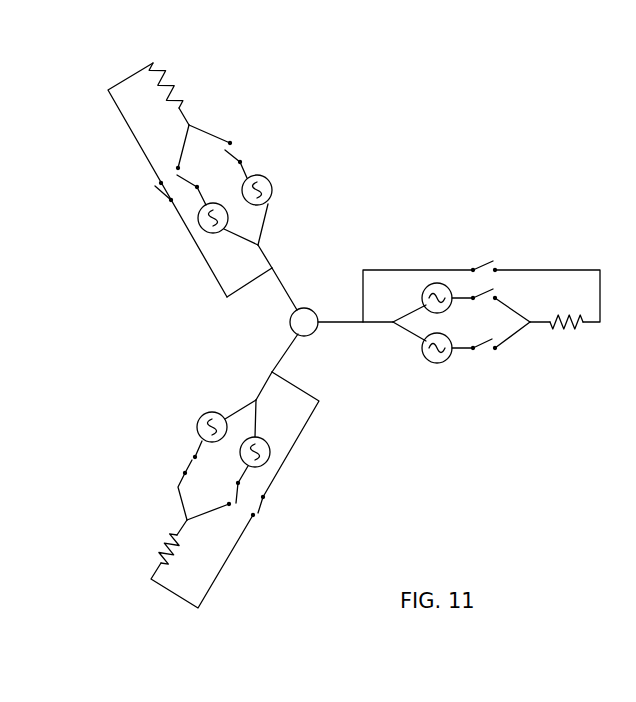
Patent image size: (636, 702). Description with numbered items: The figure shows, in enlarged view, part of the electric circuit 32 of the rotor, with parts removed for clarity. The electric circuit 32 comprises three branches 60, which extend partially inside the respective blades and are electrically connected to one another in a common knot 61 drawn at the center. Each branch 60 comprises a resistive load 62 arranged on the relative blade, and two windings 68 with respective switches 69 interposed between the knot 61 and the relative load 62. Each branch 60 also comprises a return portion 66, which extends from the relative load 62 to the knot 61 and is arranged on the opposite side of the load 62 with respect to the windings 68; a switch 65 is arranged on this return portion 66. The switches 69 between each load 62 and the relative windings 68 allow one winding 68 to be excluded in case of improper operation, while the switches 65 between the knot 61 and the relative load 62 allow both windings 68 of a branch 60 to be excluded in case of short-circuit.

The electric circuit 32 is at (343, 218).
The common knot 61 is at (290, 321).
The return portion 66 is at (535, 268).
The resistive load 62 is at (185, 92).
The switch 65 is at (483, 262).
The branch 60 is at (250, 130).
The winding 68 is at (423, 288).
The switch 69 is at (503, 288).